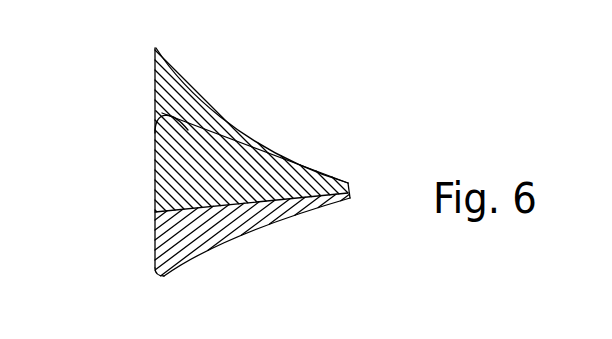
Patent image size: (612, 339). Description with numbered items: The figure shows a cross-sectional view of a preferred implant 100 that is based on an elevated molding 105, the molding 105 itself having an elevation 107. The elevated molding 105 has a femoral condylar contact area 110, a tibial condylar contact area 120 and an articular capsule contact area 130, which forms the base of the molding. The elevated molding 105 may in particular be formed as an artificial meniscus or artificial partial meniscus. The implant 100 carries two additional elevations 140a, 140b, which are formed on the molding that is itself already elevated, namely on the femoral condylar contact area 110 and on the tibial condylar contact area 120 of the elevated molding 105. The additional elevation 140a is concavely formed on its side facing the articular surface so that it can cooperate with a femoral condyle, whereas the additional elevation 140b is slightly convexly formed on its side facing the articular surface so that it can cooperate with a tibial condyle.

The implant 100 is at (212, 162).
The elevated molding 105 is at (155, 165).
The elevation 107 is at (155, 132).
The femoral condylar contact area 110 is at (240, 128).
The tibial condylar contact area 120 is at (227, 213).
The articular capsule contact area 130 is at (155, 192).
The additional elevation 140a is at (186, 96).
The additional elevation 140b is at (183, 247).